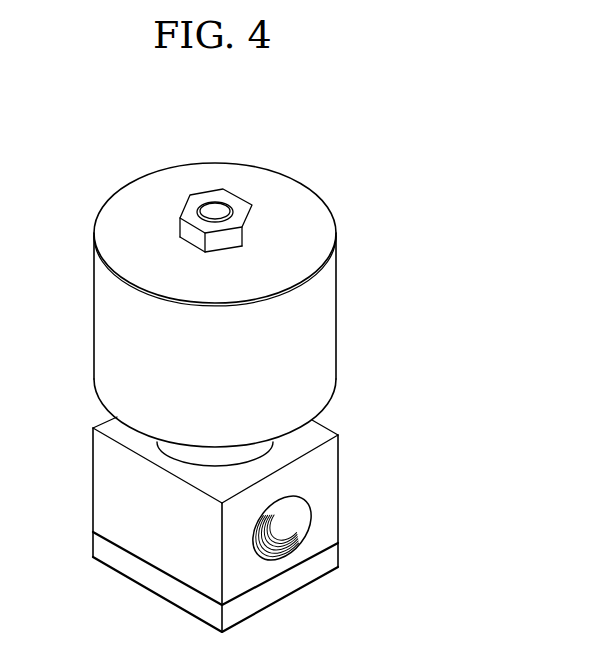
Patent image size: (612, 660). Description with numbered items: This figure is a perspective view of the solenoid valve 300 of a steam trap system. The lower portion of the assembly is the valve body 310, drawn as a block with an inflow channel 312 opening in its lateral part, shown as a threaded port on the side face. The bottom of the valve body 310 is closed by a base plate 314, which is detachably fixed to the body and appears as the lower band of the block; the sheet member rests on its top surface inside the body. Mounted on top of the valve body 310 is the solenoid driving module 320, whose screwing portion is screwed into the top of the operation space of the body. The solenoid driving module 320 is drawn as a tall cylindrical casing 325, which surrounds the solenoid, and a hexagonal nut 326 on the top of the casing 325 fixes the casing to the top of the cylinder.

The solenoid valve 300 is at (163, 124).
The valve body 310 is at (346, 472).
The inflow channel 312 is at (300, 522).
The base plate 314 is at (315, 572).
The solenoid driving module 320 is at (345, 306).
The casing 325 is at (336, 338).
The nut 326 is at (240, 205).